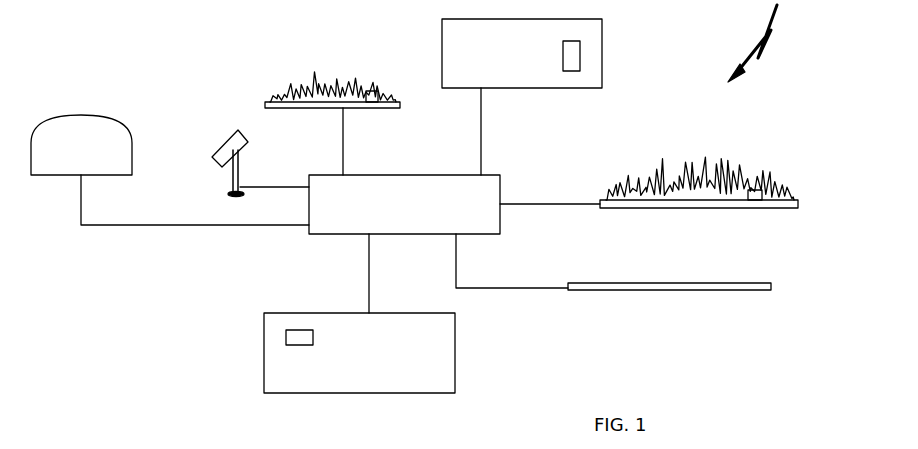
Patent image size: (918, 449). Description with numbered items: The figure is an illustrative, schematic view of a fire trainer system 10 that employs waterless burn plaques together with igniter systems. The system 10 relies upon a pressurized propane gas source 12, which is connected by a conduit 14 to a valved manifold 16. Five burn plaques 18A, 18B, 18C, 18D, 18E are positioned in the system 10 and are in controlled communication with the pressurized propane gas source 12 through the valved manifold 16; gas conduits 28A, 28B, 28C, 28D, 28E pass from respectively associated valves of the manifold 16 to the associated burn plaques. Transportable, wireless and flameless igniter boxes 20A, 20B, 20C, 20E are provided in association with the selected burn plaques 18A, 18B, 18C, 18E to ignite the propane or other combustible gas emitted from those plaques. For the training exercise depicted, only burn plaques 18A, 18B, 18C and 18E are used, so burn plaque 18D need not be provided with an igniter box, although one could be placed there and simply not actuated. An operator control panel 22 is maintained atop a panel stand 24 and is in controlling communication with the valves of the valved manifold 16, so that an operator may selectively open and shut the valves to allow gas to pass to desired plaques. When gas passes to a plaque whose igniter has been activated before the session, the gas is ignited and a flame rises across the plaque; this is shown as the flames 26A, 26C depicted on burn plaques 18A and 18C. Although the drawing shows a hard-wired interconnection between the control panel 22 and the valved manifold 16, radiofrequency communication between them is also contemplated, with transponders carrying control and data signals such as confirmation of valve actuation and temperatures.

The fire trainer system 10 is at (772, 36).
The pressurized propane gas source 12 is at (88, 115).
The conduit 14 is at (133, 230).
The valved manifold 16 is at (428, 220).
The burn plaque 18A is at (298, 108).
The burn plaque 18B is at (511, 66).
The burn plaque 18C is at (669, 210).
The burn plaque 18D is at (700, 292).
The burn plaque 18E is at (432, 353).
The igniter box 20A is at (375, 106).
The igniter box 20B is at (575, 48).
The igniter box 20C is at (755, 202).
The igniter box 20E is at (290, 342).
The operator control panel 22 is at (233, 141).
The panel stand 24 is at (234, 172).
The turf / grass 26A is at (312, 80).
The turf / grass 26C is at (743, 163).
The gas conduit 28A is at (345, 165).
The gas conduit 28B is at (483, 118).
The gas conduit 28C is at (537, 203).
The gas conduit 28D is at (500, 290).
The gas conduit 28E is at (369, 280).